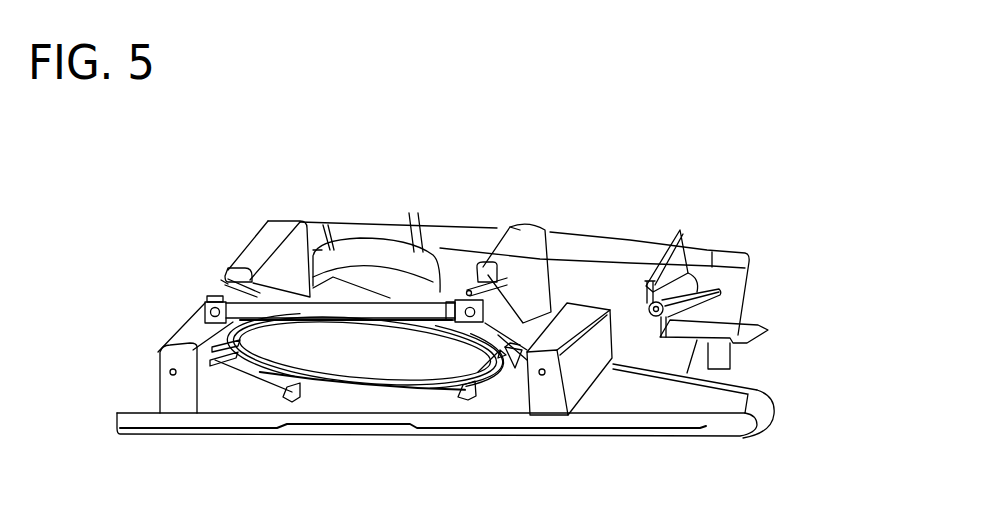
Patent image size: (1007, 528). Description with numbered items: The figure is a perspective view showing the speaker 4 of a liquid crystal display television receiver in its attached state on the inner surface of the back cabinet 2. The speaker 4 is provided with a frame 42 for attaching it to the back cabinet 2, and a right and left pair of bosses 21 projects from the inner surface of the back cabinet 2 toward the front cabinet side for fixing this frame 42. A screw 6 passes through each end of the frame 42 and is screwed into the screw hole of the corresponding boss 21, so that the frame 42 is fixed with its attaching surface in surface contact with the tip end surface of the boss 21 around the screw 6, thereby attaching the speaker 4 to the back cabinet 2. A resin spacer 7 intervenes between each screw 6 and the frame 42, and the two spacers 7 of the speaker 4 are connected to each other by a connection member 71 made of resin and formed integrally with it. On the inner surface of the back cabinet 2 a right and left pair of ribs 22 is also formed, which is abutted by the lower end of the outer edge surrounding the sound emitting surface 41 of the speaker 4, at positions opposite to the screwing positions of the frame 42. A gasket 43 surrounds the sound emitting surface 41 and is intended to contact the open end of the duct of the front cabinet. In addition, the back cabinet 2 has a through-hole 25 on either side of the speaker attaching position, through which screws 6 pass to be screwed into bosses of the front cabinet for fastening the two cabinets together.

The back cabinet 2 is at (610, 242).
The speaker 4 is at (357, 283).
The connection member 71 is at (384, 312).
The spacer 7 is at (212, 297).
The screw 6 is at (208, 310).
The boss 21 is at (226, 297).
The through-hole 25 is at (172, 372).
The rib 22 is at (288, 396).
The sound emitting surface 41 is at (361, 363).
The frame 42 is at (510, 364).
The gasket 43 is at (482, 375).